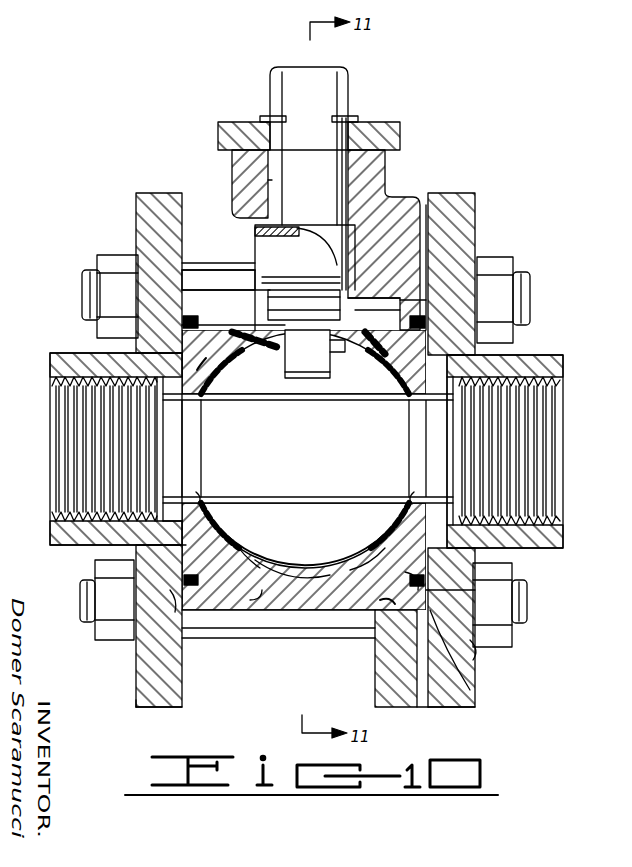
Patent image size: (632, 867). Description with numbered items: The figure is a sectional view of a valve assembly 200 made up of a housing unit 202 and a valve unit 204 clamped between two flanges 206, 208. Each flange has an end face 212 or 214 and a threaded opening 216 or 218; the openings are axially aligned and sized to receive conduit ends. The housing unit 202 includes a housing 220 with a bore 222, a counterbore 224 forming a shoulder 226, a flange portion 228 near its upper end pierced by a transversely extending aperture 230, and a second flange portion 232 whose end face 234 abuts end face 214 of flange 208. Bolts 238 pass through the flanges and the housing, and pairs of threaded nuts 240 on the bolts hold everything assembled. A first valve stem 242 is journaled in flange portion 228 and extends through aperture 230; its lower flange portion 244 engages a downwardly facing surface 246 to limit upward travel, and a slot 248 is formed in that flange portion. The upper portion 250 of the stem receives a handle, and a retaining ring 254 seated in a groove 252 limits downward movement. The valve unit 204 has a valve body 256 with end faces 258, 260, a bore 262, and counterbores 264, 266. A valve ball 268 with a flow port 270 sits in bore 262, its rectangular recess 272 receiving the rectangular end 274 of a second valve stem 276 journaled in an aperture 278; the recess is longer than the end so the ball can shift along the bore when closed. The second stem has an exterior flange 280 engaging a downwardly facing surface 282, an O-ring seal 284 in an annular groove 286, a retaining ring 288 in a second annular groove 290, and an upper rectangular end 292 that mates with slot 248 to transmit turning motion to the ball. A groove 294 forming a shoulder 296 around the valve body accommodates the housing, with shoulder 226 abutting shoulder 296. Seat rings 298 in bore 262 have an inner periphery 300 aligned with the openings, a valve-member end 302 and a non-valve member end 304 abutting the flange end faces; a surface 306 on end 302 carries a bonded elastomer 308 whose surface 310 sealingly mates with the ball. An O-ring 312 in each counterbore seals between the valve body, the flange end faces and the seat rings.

The valve assembly 200 is at (416, 142).
The housing unit 202 is at (398, 191).
The valve unit 204 is at (255, 632).
The flange 206 is at (150, 706).
The flange 208 is at (478, 702).
The end face 212 is at (183, 700).
The end face 214 is at (423, 708).
The threaded opening 216 is at (60, 396).
The threaded opening 218 is at (540, 520).
The housing 220 is at (413, 226).
The bore 222 is at (430, 312).
The counterbore 224 is at (410, 302).
The shoulder 226 is at (430, 603).
The flange portion 228 is at (243, 165).
The transversely extending aperture 230 is at (265, 182).
The second flange portion 232 is at (455, 670).
The end face 234 is at (478, 655).
The bolt 238 is at (80, 292).
The threaded nut 240 is at (118, 262).
The first valve stem 242 is at (372, 127).
The lower flange portion 244 is at (365, 222).
The downwardly facing surface 246 is at (238, 226).
The slot 248 is at (255, 247).
The upper portion 250 is at (335, 76).
The groove 252 is at (335, 117).
The retaining ring 254 is at (268, 117).
The valve body 256 is at (240, 606).
The end face 258 is at (178, 600).
The end face 260 is at (470, 595).
The bore 262 is at (260, 595).
The counterbore 264 is at (203, 590).
The counterbore 266 is at (428, 584).
The valve ball 268 is at (295, 512).
The flow port 270 is at (297, 469).
The rectangular recess 272 is at (333, 376).
The rectangular end 274 is at (290, 356).
The second valve stem 276 is at (265, 290).
The aperture 278 is at (352, 312).
The exterior flange 280 is at (275, 318).
The downwardly facing surface 282 is at (338, 352).
The O-ring seal 284 is at (262, 301).
The annular groove 286 is at (312, 293).
The retaining ring 288 is at (350, 290).
The second annular groove 290 is at (305, 274).
The rectangular end 292 is at (285, 250).
The groove 294 is at (412, 596).
The shoulder 296 is at (385, 602).
The seat ring 298 is at (222, 500).
The inner periphery 300 is at (200, 500).
The valve-member end 302 is at (245, 560).
The non-valve member end 304 is at (175, 524).
The surface 306 is at (215, 385).
The elastomer 308 is at (370, 556).
The surface 310 is at (270, 566).
The O-ring 312 is at (182, 576).